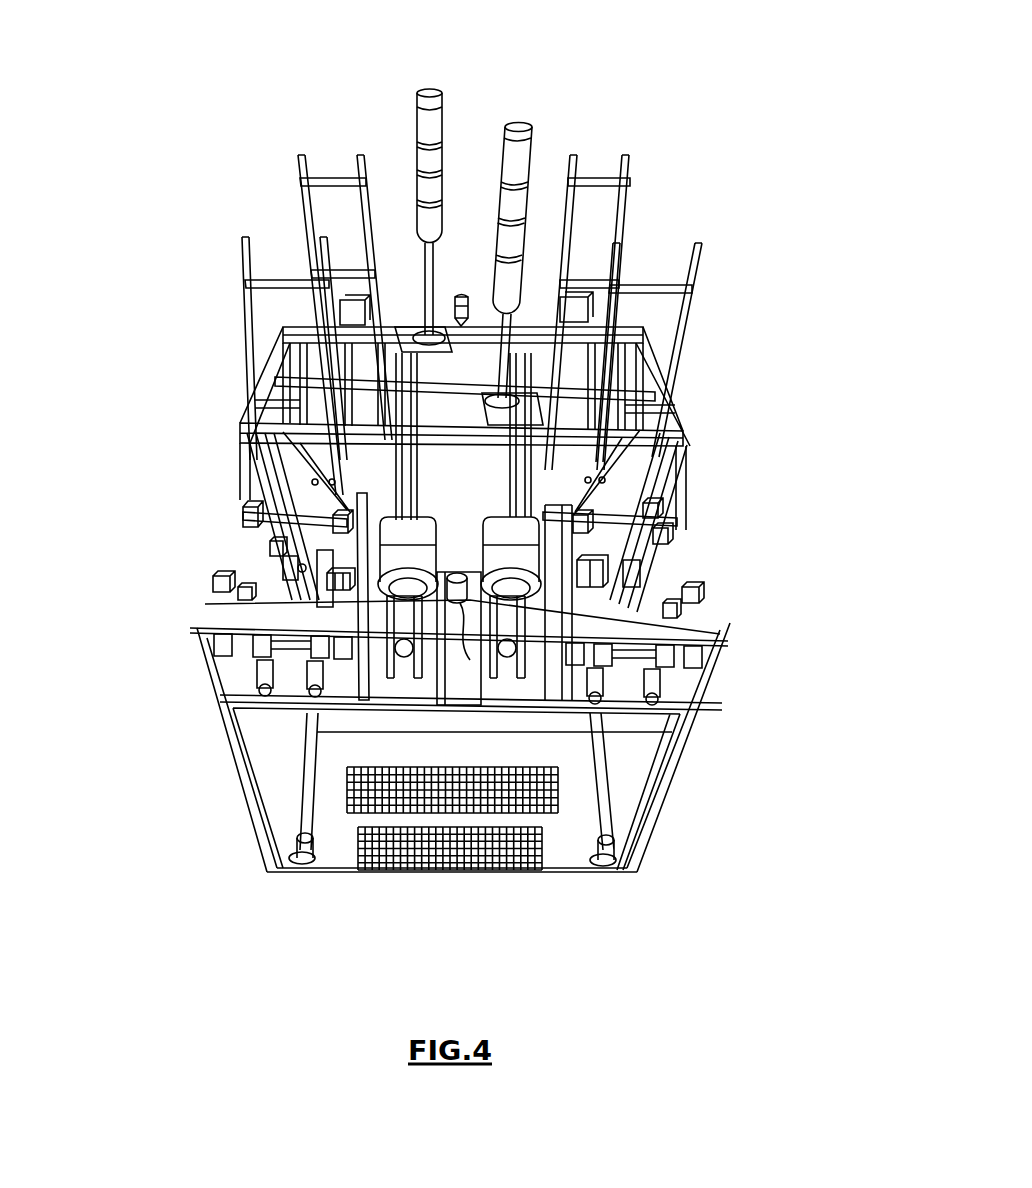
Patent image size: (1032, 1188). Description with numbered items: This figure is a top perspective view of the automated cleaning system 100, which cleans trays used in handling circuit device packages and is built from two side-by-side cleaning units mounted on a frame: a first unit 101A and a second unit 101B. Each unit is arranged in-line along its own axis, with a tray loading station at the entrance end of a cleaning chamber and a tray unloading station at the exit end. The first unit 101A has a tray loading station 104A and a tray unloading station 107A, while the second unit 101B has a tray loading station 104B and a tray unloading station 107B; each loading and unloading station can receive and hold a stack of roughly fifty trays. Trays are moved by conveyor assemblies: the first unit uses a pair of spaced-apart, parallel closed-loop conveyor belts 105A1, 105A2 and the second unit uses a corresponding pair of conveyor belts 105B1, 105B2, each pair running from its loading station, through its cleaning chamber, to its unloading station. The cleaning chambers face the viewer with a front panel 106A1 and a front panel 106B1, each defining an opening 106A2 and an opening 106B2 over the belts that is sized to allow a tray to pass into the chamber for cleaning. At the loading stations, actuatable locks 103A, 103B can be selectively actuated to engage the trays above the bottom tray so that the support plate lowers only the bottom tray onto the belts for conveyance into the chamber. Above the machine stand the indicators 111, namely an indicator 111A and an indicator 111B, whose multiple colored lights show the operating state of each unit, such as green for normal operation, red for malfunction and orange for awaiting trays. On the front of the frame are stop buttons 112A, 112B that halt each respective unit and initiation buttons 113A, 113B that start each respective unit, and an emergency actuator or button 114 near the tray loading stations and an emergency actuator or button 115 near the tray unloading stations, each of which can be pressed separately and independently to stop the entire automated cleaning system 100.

The automated cleaning system 100 is at (121, 100).
The first unit 101A is at (810, 428).
The second unit 101B is at (131, 345).
The actuatable lock 103A is at (594, 518).
The actuatable lock 103B is at (336, 518).
The tray loading station 104A is at (641, 574).
The tray loading station 104B is at (289, 567).
The conveyor belt 105A1 is at (652, 557).
The conveyor belt 105A2 is at (600, 584).
The conveyor belt 105B1 is at (281, 547).
The conveyor belt 105B2 is at (333, 580).
The front panel 106A1 is at (614, 468).
The opening 106A2 is at (632, 492).
The front panel 106B1 is at (301, 465).
The opening 106B2 is at (299, 485).
The tray unloading station 107A is at (574, 303).
The tray unloading station 107B is at (353, 308).
The indicators 111 is at (386, 67).
The indicator 111A is at (527, 125).
The indicator 111B is at (416, 113).
The stop button 112A is at (615, 715).
The stop button 112B is at (296, 705).
The initiation button 113A is at (676, 694).
The initiation button 113B is at (256, 705).
The emergency actuator or button 114 is at (459, 568).
The emergency actuator or button 115 is at (459, 294).